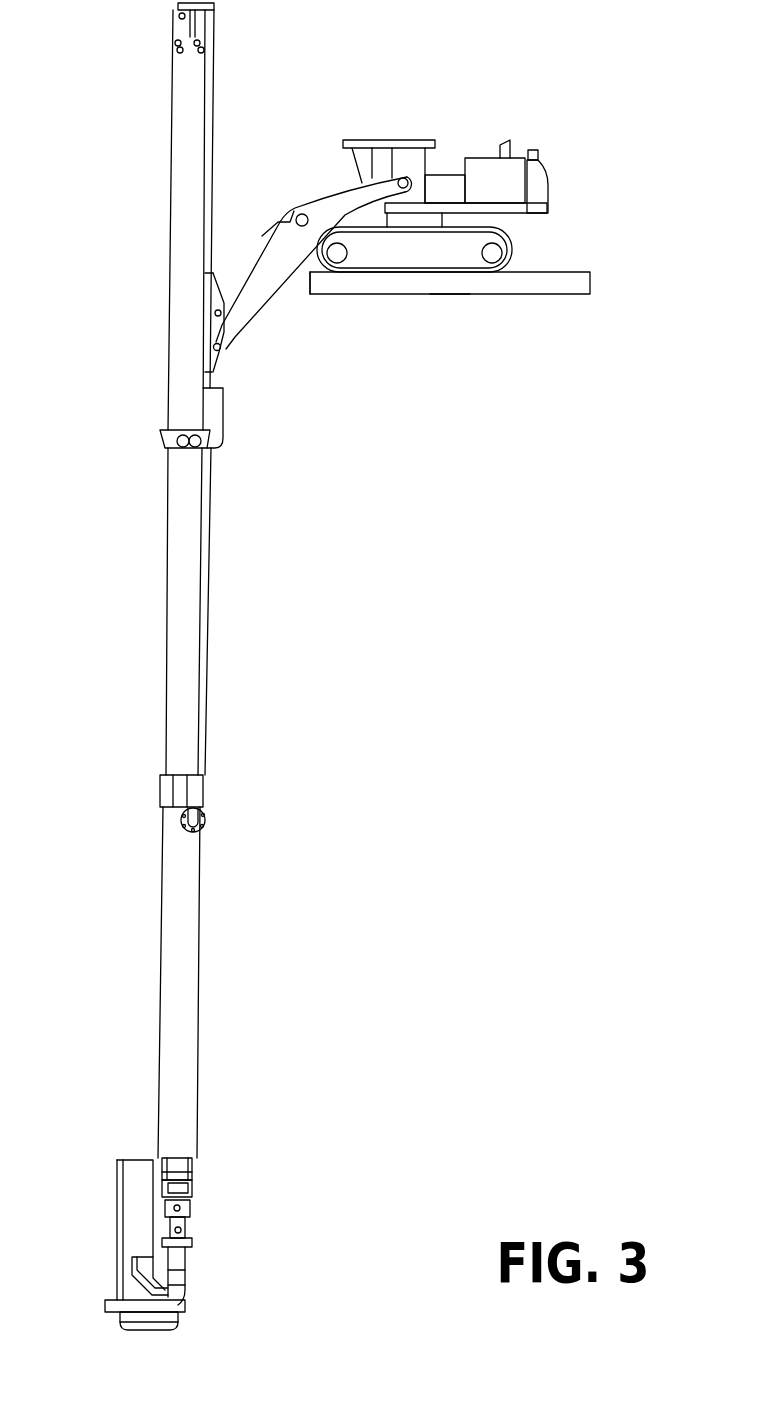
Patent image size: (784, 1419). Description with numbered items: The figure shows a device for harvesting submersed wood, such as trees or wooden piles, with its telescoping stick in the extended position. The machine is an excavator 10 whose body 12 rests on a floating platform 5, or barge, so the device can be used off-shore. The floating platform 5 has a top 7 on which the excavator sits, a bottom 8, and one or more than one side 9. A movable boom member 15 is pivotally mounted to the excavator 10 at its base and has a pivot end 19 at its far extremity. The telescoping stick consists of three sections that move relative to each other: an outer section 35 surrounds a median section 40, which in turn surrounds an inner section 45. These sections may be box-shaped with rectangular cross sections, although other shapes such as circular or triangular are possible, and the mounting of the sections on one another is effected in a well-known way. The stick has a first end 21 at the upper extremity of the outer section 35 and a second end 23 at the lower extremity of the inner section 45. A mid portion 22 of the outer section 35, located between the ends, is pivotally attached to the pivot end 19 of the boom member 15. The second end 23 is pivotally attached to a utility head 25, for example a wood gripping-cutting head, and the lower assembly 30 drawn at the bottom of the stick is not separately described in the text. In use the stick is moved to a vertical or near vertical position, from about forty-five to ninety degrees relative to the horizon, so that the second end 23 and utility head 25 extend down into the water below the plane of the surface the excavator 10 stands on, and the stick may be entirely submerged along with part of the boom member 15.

The floating platform 5 is at (577, 285).
The top 7 is at (543, 272).
The bottom 8 is at (450, 295).
The side 9 is at (311, 277).
The excavator 10 is at (472, 180).
The body of an excavator 12 is at (548, 185).
The movable boom member 15 is at (305, 190).
The pivot end 19 is at (214, 349).
The first end 21 is at (173, 37).
The mid portion 22 is at (170, 347).
The second end 23 is at (186, 1228).
The utility head 25 is at (186, 1257).
The drive tool 30 is at (181, 1244).
The outer section 35 is at (170, 265).
The median section 40 is at (168, 588).
The inner section 45 is at (163, 975).